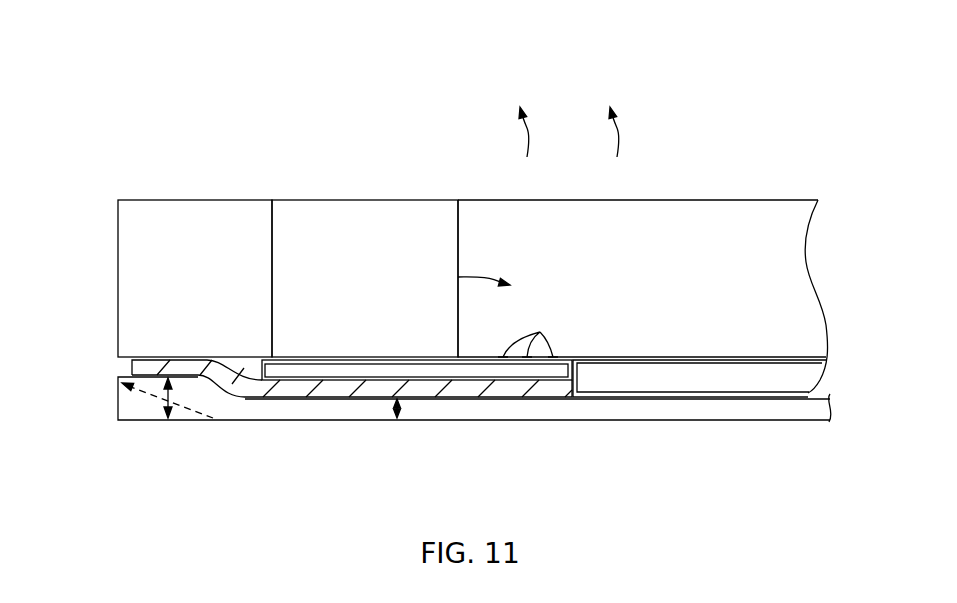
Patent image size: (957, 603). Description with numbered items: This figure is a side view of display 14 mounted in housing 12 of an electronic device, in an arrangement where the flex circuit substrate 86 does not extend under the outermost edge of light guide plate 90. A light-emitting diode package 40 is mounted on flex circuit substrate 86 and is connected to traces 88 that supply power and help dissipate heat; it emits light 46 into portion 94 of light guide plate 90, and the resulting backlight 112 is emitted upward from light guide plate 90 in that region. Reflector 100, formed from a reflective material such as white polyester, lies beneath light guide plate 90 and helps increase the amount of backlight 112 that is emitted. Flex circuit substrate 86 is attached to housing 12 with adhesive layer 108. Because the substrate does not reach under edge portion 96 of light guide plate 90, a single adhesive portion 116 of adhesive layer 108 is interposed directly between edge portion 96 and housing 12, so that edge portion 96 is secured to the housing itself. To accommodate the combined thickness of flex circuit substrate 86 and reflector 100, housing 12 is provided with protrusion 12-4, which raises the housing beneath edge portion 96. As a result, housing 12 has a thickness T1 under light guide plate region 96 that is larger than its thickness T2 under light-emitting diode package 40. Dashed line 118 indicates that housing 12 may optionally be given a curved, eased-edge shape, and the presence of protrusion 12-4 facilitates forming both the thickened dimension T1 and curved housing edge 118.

The display 14 is at (731, 68).
The backlight 112 is at (530, 136).
The portion of light guide plate 94 is at (822, 194).
The edge portion of light guide plate 96 is at (118, 193).
The light-emitting diode package 40 is at (315, 200).
The light guide plate 90 is at (118, 262).
The light 46 is at (479, 280).
The traces 88 is at (534, 337).
The adhesive portion 116 is at (265, 350).
The flex circuit substrate 86 is at (362, 372).
The adhesive layer 108 is at (300, 392).
The reflector 100 is at (692, 388).
The housing 12 is at (515, 412).
The protrusion 12-4 is at (128, 384).
The curved housing edge 118 is at (142, 398).
The housing thickness T1 is at (172, 395).
The housing thickness T2 is at (400, 404).